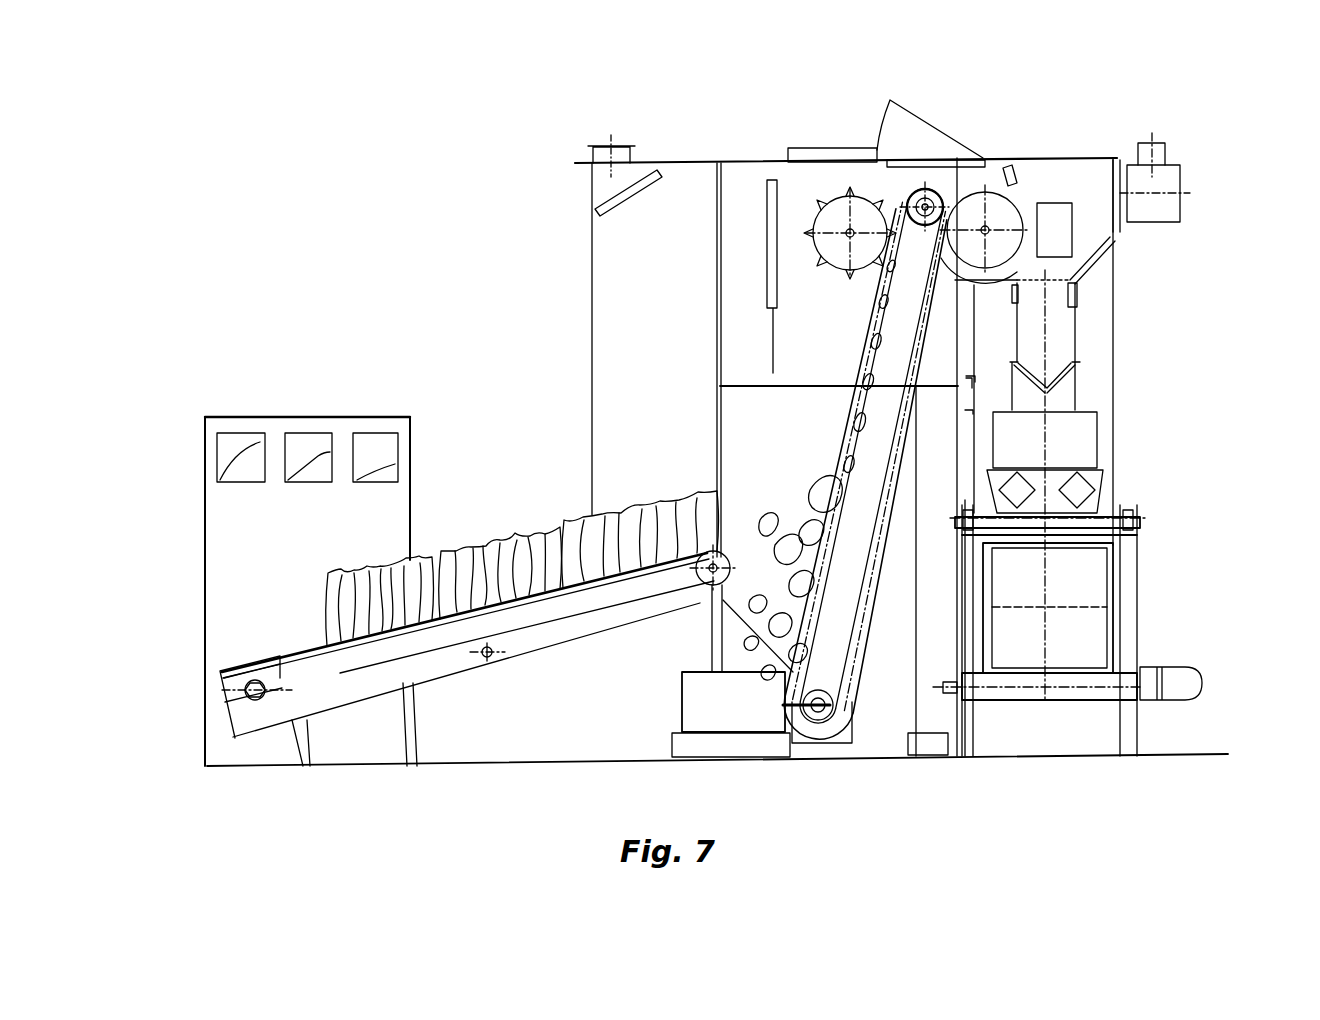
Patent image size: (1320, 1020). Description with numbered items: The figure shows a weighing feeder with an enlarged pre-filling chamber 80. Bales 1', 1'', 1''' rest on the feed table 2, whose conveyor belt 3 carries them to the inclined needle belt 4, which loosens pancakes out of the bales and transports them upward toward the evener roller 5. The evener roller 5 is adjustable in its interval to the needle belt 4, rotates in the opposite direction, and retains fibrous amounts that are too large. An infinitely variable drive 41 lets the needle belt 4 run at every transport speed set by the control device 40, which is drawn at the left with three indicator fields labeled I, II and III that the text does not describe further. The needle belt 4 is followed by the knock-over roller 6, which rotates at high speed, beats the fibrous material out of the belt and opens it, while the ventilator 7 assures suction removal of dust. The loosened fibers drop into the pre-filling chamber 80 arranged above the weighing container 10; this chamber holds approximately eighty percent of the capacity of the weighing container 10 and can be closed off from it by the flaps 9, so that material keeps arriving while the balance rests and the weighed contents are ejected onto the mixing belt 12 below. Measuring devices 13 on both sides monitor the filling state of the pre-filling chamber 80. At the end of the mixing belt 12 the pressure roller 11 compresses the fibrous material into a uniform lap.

The bale 1' is at (380, 568).
The bale 1'' is at (500, 541).
The bale 1''' is at (626, 512).
The feed table 2 is at (400, 677).
The conveyor belt 3 is at (297, 692).
The needle belt 4 is at (837, 500).
The evener roller 5 is at (827, 213).
The knock-over roller 6 is at (1007, 210).
The ventilator 7 is at (1167, 182).
The flaps 9 is at (1083, 408).
The weighing container 10 is at (1078, 443).
The pressure roller 11 is at (1093, 570).
The mixing belt 12 is at (1103, 682).
The measuring devices 13 is at (1073, 303).
The control device 40 is at (252, 530).
The infinitely variable drive 41 is at (707, 698).
The pre-filling chamber 80 is at (1057, 306).
The display instrument I is at (228, 447).
The display instrument II is at (303, 445).
The display instrument III is at (375, 447).